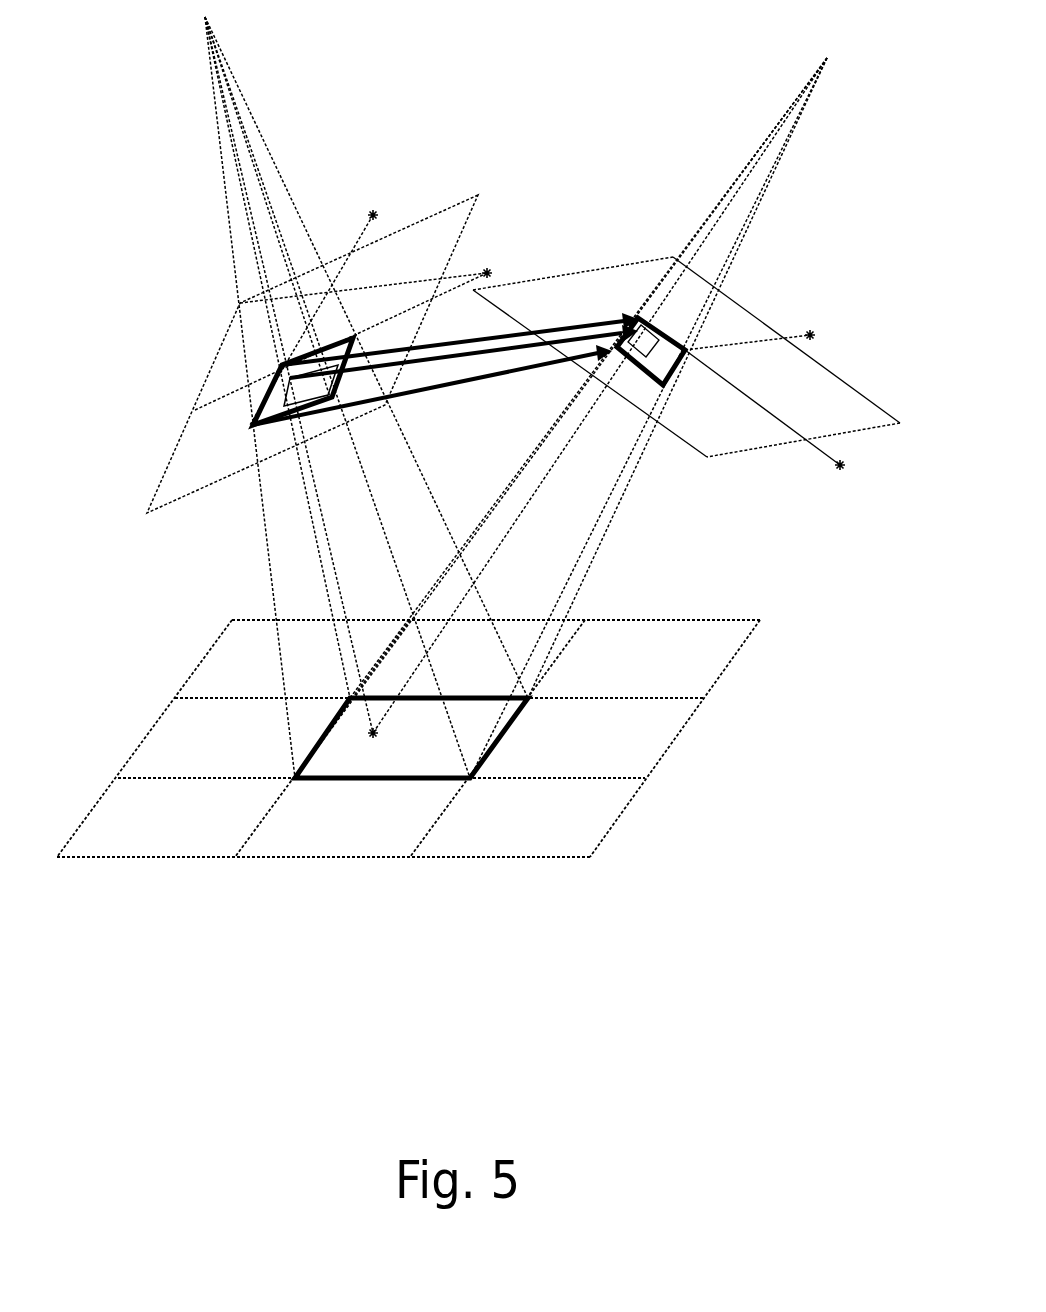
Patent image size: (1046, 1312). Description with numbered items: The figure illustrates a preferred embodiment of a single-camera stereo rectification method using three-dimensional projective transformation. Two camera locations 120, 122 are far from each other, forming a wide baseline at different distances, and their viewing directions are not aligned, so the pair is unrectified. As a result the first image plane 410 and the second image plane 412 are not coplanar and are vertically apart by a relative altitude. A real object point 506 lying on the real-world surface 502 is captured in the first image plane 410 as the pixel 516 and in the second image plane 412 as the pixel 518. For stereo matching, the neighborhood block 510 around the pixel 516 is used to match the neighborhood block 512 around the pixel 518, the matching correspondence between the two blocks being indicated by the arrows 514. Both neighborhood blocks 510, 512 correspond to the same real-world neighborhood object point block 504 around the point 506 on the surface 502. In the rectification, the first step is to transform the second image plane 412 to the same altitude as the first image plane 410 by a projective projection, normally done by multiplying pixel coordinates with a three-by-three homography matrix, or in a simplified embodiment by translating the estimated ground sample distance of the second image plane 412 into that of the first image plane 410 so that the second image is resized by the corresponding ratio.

The first camera location 120 is at (208, 20).
The second camera location 122 is at (829, 62).
The first image plane 410 is at (458, 232).
The second image plane 412 is at (803, 378).
The real-world object plane 502 is at (725, 637).
The real-world neighborhood object point block 504 is at (420, 768).
The real object point 506 is at (371, 735).
The first neighborhood block 510 is at (278, 405).
The second neighborhood block 512 is at (660, 358).
The block matching correspondence 514 is at (500, 350).
The first image pixel 516 is at (272, 368).
The second image pixel 518 is at (660, 323).